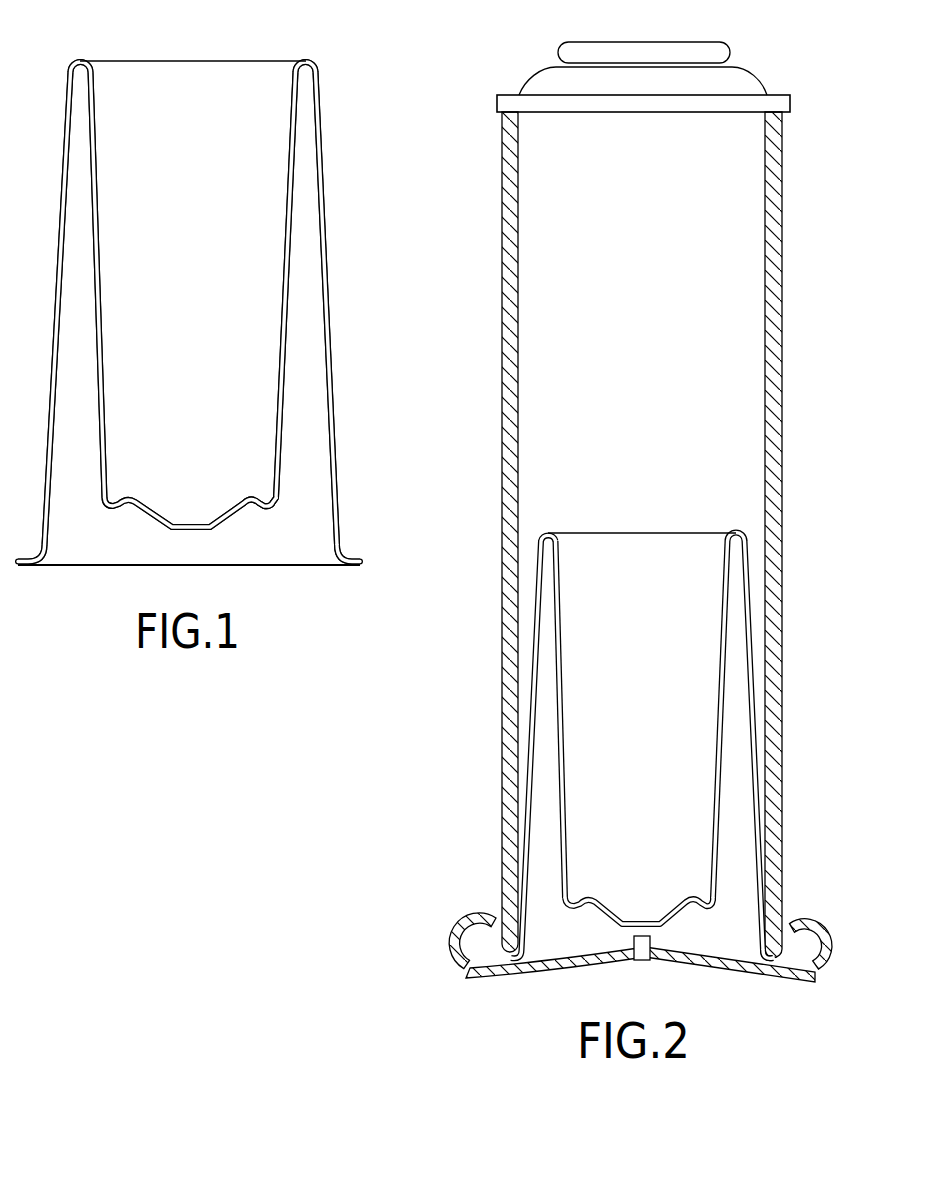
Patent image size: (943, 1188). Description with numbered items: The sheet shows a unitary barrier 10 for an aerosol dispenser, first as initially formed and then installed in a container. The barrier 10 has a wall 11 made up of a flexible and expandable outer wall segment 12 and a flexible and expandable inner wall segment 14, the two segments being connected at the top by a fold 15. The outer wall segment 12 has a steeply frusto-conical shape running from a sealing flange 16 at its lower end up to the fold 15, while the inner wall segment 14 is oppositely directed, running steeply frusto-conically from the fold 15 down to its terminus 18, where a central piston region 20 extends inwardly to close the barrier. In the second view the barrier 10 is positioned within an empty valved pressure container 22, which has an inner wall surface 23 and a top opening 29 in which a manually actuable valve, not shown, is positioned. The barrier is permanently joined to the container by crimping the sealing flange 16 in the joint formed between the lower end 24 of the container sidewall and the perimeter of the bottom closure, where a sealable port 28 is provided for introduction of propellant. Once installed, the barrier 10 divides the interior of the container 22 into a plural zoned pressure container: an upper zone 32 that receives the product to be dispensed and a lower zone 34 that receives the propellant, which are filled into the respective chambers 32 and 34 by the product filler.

In FIG. 1, the unitary barrier 10 is at (233, 289).
In FIG. 1, the wall 11 is at (324, 426).
In FIG. 2, the wall 11 is at (561, 884).
In FIG. 1, the outer wall segment 12 is at (337, 447).
In FIG. 2, the outer wall segment 12 is at (530, 665).
In FIG. 1, the inner wall segment 14 is at (97, 280).
In FIG. 2, the inner wall segment 14 is at (562, 660).
In FIG. 1, the fold 15 is at (283, 60).
In FIG. 1, the sealing flange 16 is at (378, 536).
In FIG. 2, the sealing flange 16 is at (817, 966).
In FIG. 1, the terminus of the inner wall segment 18 is at (278, 503).
In FIG. 1, the central piston region 20 is at (135, 510).
In FIG. 2, the central piston region 20 is at (590, 905).
In FIG. 2, the valved pressure container 22 is at (670, 515).
In FIG. 2, the inner wall surface 23 is at (520, 393).
In FIG. 2, the lower end of the sidewall 24 is at (762, 985).
In FIG. 2, the sealable port 28 is at (822, 937).
In FIG. 2, the opening 29 is at (718, 50).
In FIG. 2, the upper zone 32 is at (770, 262).
In FIG. 2, the lower zone 34 is at (746, 936).